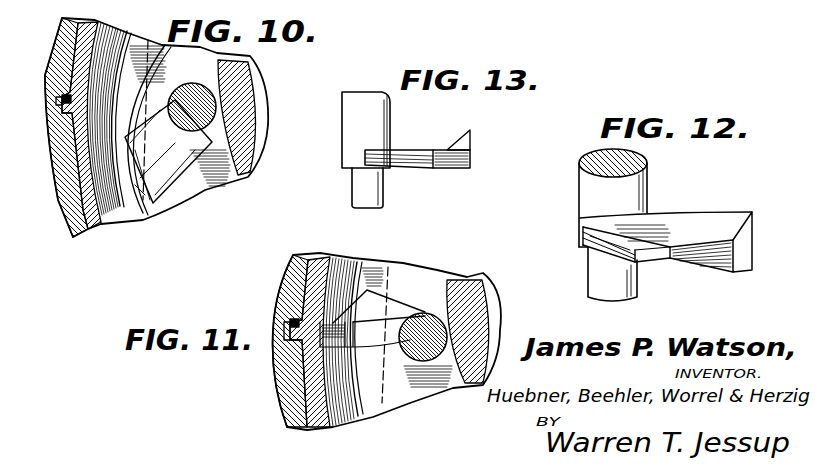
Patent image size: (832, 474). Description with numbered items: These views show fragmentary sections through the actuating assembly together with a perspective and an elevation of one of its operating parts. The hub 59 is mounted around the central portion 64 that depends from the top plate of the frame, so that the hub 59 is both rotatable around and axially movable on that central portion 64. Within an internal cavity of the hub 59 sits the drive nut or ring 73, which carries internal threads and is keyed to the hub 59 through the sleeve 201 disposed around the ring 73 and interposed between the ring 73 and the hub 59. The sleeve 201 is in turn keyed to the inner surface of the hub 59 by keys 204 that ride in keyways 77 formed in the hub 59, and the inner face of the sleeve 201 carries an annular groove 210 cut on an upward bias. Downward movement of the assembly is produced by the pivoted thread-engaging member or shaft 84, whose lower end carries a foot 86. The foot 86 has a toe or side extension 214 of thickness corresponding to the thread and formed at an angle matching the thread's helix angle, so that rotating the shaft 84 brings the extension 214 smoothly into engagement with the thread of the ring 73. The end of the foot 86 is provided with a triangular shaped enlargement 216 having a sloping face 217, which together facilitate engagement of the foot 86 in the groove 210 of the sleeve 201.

In FIG. 10, the hub 59 is at (60, 38).
In FIG. 11, the hub 59 is at (283, 282).
In FIG. 10, the central portion 64 is at (254, 68).
In FIG. 11, the central portion 64 is at (486, 284).
In FIG. 10, the drive nut or ring 73 is at (143, 52).
In FIG. 11, the drive nut or ring 73 is at (375, 272).
In FIG. 10, the keyways 77 is at (58, 99).
In FIG. 11, the keyways 77 is at (290, 322).
In FIG. 10, the thread-engaging member or shaft 84 is at (195, 90).
In FIG. 11, the thread-engaging member or shaft 84 is at (425, 313).
In FIG. 13, the thread-engaging member or shaft 84 is at (352, 115).
In FIG. 12, the thread-engaging member or shaft 84 is at (585, 181).
In FIG. 10, the foot 86 is at (182, 150).
In FIG. 11, the foot 86 is at (367, 348).
In FIG. 13, the foot 86 is at (425, 148).
In FIG. 12, the foot 86 is at (665, 228).
In FIG. 10, the sleeve 201 is at (100, 222).
In FIG. 10, the keys 204 is at (68, 113).
In FIG. 11, the keys 204 is at (283, 350).
In FIG. 10, the annular groove 210 is at (100, 192).
In FIG. 11, the annular groove 210 is at (328, 400).
In FIG. 13, the toe or side extension 214 is at (418, 165).
In FIG. 12, the toe or side extension 214 is at (650, 255).
In FIG. 13, the triangular shaped enlargement 216 is at (472, 133).
In FIG. 12, the triangular shaped enlargement 216 is at (752, 223).
In FIG. 13, the sloping face 217 is at (465, 149).
In FIG. 12, the sloping face 217 is at (735, 246).